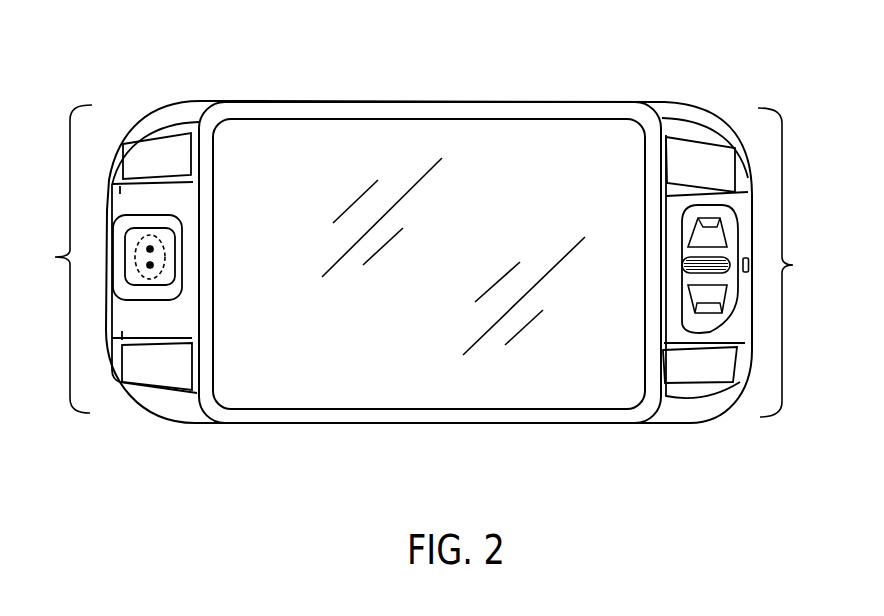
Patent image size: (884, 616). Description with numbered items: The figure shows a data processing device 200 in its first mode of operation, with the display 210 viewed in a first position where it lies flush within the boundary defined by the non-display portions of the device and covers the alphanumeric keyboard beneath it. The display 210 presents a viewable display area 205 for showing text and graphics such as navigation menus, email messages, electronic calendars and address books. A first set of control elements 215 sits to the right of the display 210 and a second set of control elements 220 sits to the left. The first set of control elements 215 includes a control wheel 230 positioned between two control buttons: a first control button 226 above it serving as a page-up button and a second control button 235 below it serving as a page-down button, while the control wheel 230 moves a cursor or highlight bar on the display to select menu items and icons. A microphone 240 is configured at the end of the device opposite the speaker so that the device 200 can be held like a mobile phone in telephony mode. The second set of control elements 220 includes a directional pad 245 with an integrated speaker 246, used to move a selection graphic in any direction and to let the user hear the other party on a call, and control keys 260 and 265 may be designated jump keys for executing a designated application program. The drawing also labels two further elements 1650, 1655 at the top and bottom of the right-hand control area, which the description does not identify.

The data processing device 200 is at (108, 27).
The viewable display area 205 is at (362, 385).
The display 210 is at (407, 111).
The first set of control elements 215 is at (750, 262).
The second set of control elements 220 is at (108, 259).
The first control button 226 is at (708, 233).
The control wheel 230 is at (718, 272).
The second control button 235 is at (708, 302).
The microphone 240 is at (750, 264).
The directional pad 245 is at (148, 265).
The speaker 246 is at (139, 238).
The control key 260 is at (170, 168).
The control key 265 is at (170, 370).
The upper right button 1650 is at (721, 173).
The lower right button 1655 is at (718, 381).